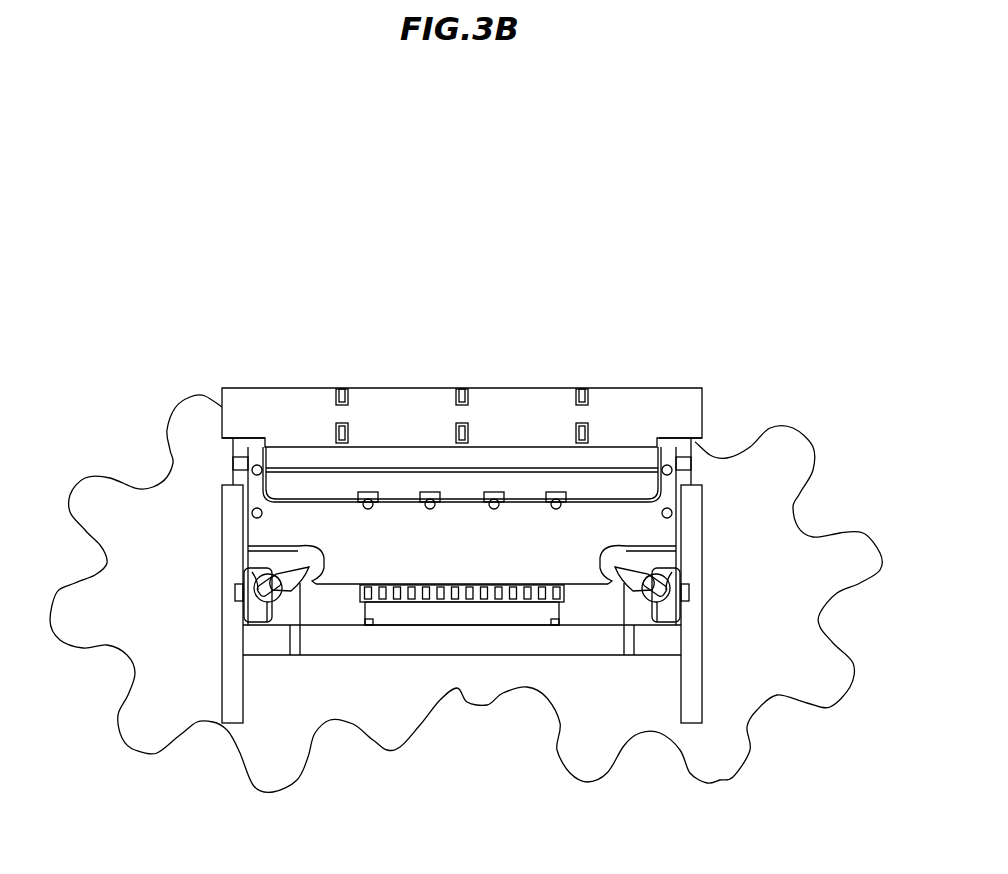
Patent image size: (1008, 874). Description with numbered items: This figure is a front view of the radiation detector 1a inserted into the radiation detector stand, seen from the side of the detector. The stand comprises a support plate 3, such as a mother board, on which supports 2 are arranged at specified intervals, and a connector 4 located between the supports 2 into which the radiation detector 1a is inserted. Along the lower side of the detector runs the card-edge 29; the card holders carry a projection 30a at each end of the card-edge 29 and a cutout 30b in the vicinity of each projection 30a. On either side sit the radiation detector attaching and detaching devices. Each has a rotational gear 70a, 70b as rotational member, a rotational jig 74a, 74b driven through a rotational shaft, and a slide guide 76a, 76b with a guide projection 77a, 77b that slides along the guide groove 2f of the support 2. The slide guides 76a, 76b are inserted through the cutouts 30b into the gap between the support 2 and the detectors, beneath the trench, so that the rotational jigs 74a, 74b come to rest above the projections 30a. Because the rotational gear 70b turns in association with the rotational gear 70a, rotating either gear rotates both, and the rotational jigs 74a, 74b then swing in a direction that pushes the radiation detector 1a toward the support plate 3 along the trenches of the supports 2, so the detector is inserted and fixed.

The radiation detector 1a is at (536, 366).
The support 2 is at (232, 707).
The guide groove 2f is at (240, 594).
The support plate 3 is at (408, 650).
The connector 4 is at (448, 614).
The card-edge 29 is at (487, 601).
The projection 30a is at (312, 582).
The cutout 30b is at (299, 545).
The rotational gear 70a is at (192, 418).
The rotational gear 70b is at (790, 442).
The rotational jig 74a is at (304, 586).
The rotational jig 74b is at (630, 580).
The slide guide 76a is at (257, 578).
The slide guide 76b is at (670, 617).
The guide projection 77a is at (240, 597).
The guide projection 77b is at (688, 586).